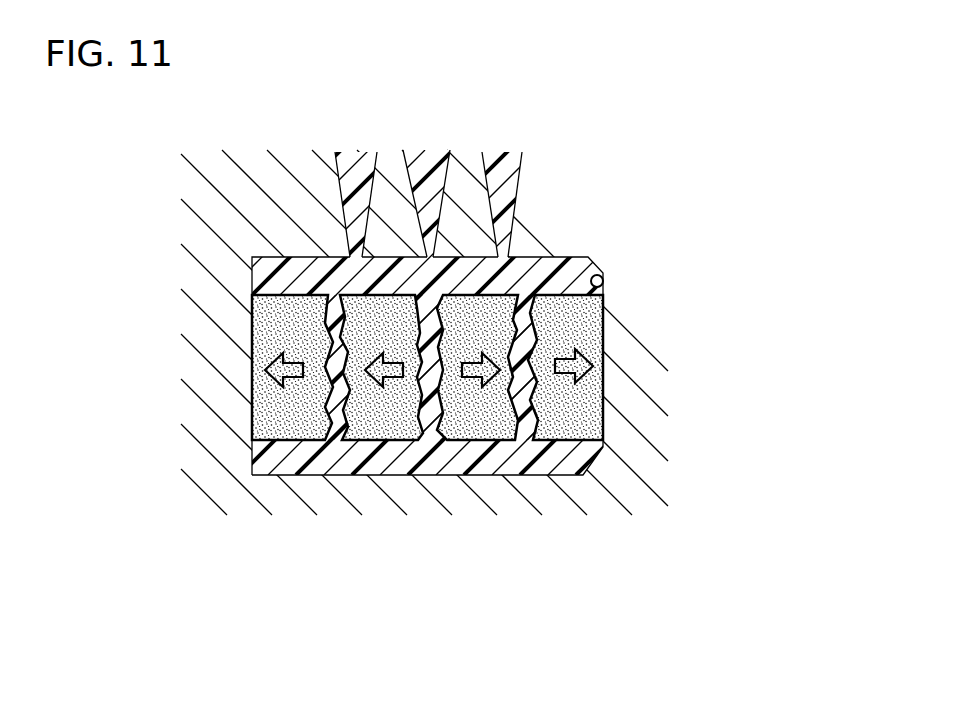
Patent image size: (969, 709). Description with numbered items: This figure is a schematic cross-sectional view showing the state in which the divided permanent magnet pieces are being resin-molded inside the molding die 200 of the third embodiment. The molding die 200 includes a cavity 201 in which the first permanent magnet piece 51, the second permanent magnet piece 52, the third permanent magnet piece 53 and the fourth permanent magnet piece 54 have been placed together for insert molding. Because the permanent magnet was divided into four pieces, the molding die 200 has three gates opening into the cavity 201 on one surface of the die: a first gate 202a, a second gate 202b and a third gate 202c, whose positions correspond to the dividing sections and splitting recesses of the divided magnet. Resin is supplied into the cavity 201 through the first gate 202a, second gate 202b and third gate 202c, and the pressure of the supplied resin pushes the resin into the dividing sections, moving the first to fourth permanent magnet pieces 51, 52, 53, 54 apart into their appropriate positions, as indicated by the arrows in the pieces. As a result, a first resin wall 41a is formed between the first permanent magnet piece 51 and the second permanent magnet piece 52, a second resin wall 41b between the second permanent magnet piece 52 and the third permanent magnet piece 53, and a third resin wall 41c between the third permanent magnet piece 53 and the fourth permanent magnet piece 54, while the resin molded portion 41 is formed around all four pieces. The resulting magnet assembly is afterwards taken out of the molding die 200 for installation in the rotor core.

The resin molded portion 41 is at (592, 254).
The first resin wall 41a is at (337, 423).
The second resin wall 41b is at (435, 420).
The third resin wall 41c is at (533, 427).
The first permanent magnet piece 51 is at (295, 420).
The second permanent magnet piece 52 is at (388, 432).
The third permanent magnet piece 53 is at (487, 413).
The fourth permanent magnet piece 54 is at (577, 430).
The molding die 200 is at (692, 416).
The cavity 201 is at (605, 284).
The first gate 202a is at (355, 172).
The second gate 202b is at (428, 173).
The third gate 202c is at (500, 173).